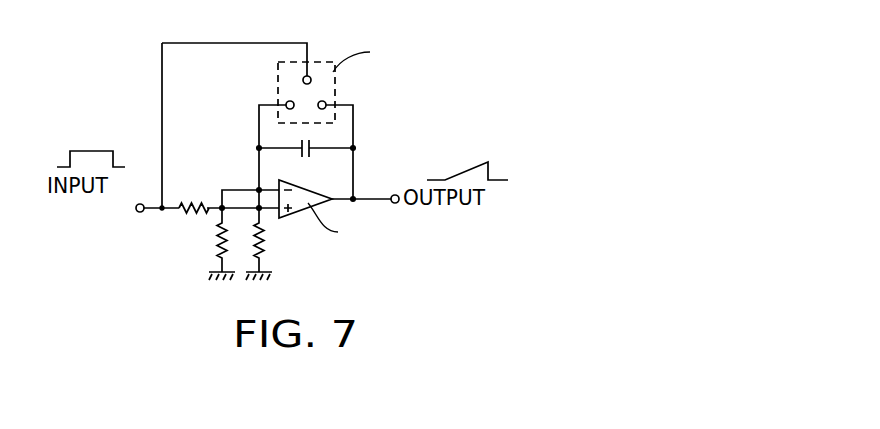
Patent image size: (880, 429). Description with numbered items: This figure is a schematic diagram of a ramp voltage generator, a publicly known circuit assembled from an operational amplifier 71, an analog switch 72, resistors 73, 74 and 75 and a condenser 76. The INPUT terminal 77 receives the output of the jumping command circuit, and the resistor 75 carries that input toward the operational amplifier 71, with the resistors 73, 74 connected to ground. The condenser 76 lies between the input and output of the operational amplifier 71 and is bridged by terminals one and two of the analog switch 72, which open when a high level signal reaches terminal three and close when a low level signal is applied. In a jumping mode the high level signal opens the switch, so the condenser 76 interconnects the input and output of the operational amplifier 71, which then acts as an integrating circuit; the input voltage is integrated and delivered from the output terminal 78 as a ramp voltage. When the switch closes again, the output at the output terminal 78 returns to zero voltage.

The operational amplifier 71 is at (303, 191).
The analog switch 72 is at (318, 62).
The resistor 73 is at (219, 247).
The resistor 74 is at (266, 250).
The resistor 75 is at (192, 203).
The condenser 76 is at (297, 153).
The INPUT terminal 77 is at (139, 213).
The output terminal 78 is at (392, 196).